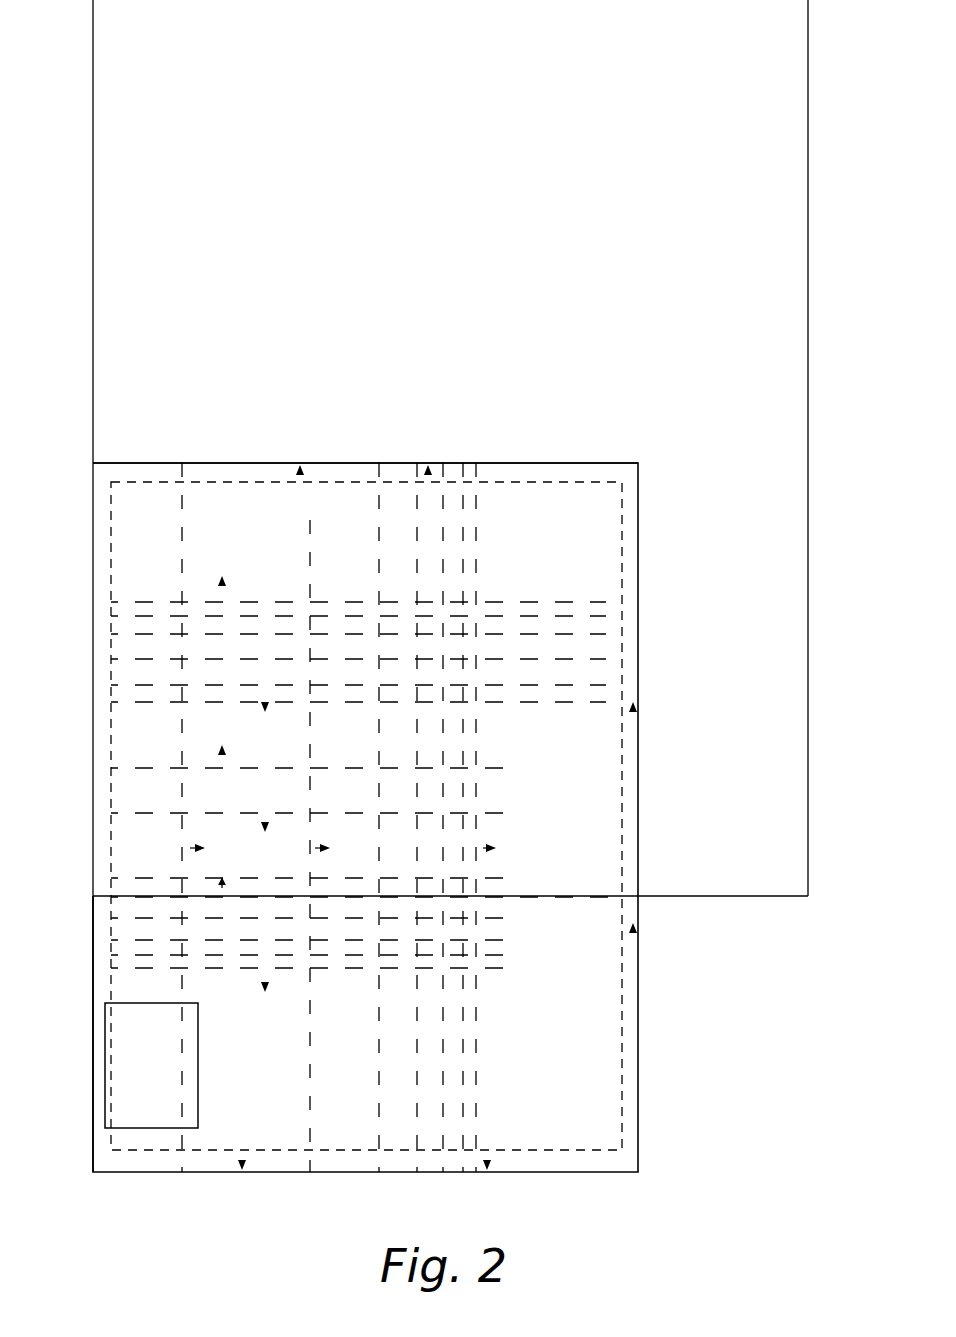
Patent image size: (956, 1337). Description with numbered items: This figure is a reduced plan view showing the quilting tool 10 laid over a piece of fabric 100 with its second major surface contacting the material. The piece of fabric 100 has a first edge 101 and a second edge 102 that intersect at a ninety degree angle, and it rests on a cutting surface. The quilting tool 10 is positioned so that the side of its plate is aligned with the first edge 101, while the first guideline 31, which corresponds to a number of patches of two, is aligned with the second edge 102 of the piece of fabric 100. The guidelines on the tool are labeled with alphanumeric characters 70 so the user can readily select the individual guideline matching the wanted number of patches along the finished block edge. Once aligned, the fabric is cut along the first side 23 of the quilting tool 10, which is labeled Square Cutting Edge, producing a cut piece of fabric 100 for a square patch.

The quilting tool 10 is at (412, 793).
The first side 23 is at (335, 425).
The first guideline 31 is at (334, 875).
The alphanumeric characters 70 is at (131, 931).
The piece of fabric 100 is at (454, 477).
The first edge 101 is at (64, 448).
The second edge 102 is at (450, 925).